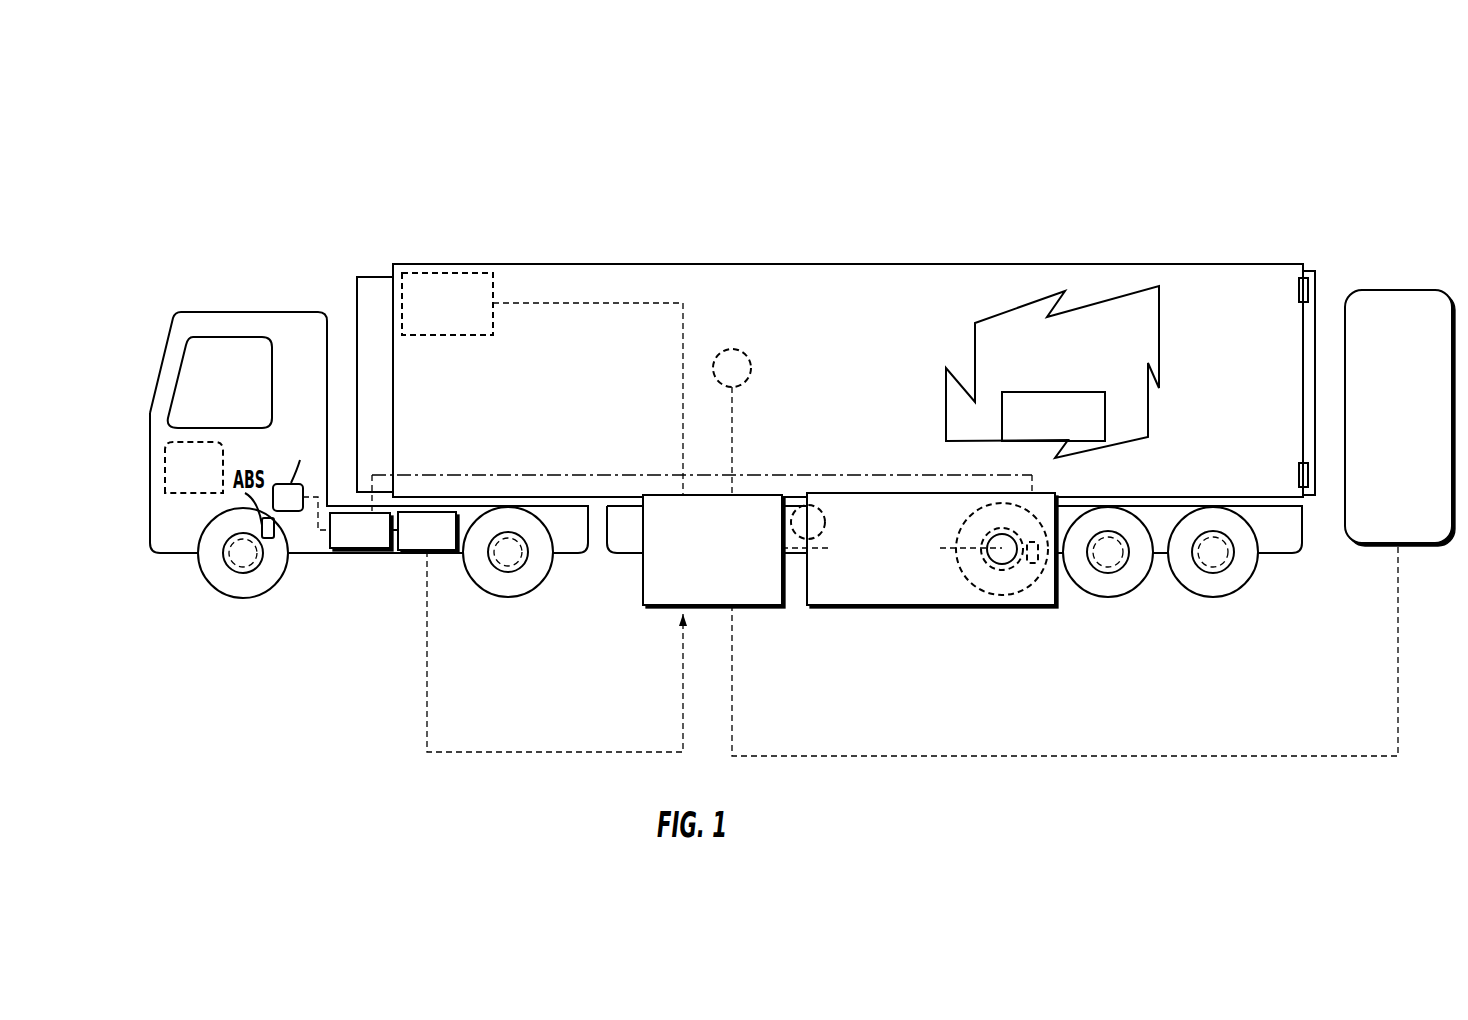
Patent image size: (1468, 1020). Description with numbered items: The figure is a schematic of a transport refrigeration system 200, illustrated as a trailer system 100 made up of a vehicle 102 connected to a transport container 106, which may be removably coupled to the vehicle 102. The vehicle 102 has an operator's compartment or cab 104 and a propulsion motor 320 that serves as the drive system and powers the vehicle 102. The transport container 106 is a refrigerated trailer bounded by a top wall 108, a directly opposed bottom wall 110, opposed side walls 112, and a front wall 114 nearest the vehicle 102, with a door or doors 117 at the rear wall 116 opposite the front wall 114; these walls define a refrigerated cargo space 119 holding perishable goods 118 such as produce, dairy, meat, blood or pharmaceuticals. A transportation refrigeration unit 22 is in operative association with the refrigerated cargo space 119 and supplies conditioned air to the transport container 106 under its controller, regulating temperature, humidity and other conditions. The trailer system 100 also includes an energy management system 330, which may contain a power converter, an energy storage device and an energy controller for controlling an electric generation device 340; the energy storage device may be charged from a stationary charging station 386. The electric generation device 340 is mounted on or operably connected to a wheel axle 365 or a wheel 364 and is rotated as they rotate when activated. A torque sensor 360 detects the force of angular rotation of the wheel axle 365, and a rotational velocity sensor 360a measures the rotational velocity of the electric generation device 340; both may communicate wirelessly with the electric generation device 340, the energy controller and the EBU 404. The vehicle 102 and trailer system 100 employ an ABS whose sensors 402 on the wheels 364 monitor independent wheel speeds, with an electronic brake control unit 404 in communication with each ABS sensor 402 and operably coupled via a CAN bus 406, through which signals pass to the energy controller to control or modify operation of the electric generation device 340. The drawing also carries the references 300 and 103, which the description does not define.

The trailer system 100 is at (294, 148).
The transport refrigeration system 200 is at (487, 175).
The charging system 300 is at (1300, 802).
The vehicle 102 is at (178, 560).
The cab 104 is at (185, 378).
The transport container 106 is at (962, 275).
The top wall 108 is at (797, 265).
The bottom wall 110 is at (1147, 497).
The side walls 112 is at (1072, 363).
The front wall 114 is at (394, 427).
The rear wall 116 is at (1303, 357).
The door 117 is at (1307, 397).
The perishable goods 118 is at (1072, 426).
The refrigerated cargo space 119 is at (1142, 344).
The transportation refrigeration unit 22 is at (450, 273).
The propulsion motor 320 is at (165, 477).
The energy management system 330 is at (660, 608).
The electric generation device 340 is at (843, 608).
The torque sensor 360 is at (118, 452).
The rotational velocity sensor 360a is at (797, 497).
The wheel 364 is at (1015, 597).
The wheel axle 365 is at (1001, 565).
The trailer wheel 103 is at (980, 555).
The charging station 386 is at (1395, 290).
The ABS sensor 402 is at (268, 543).
The electronic brake control unit 404 is at (295, 512).
The communication bus 406 is at (363, 551).